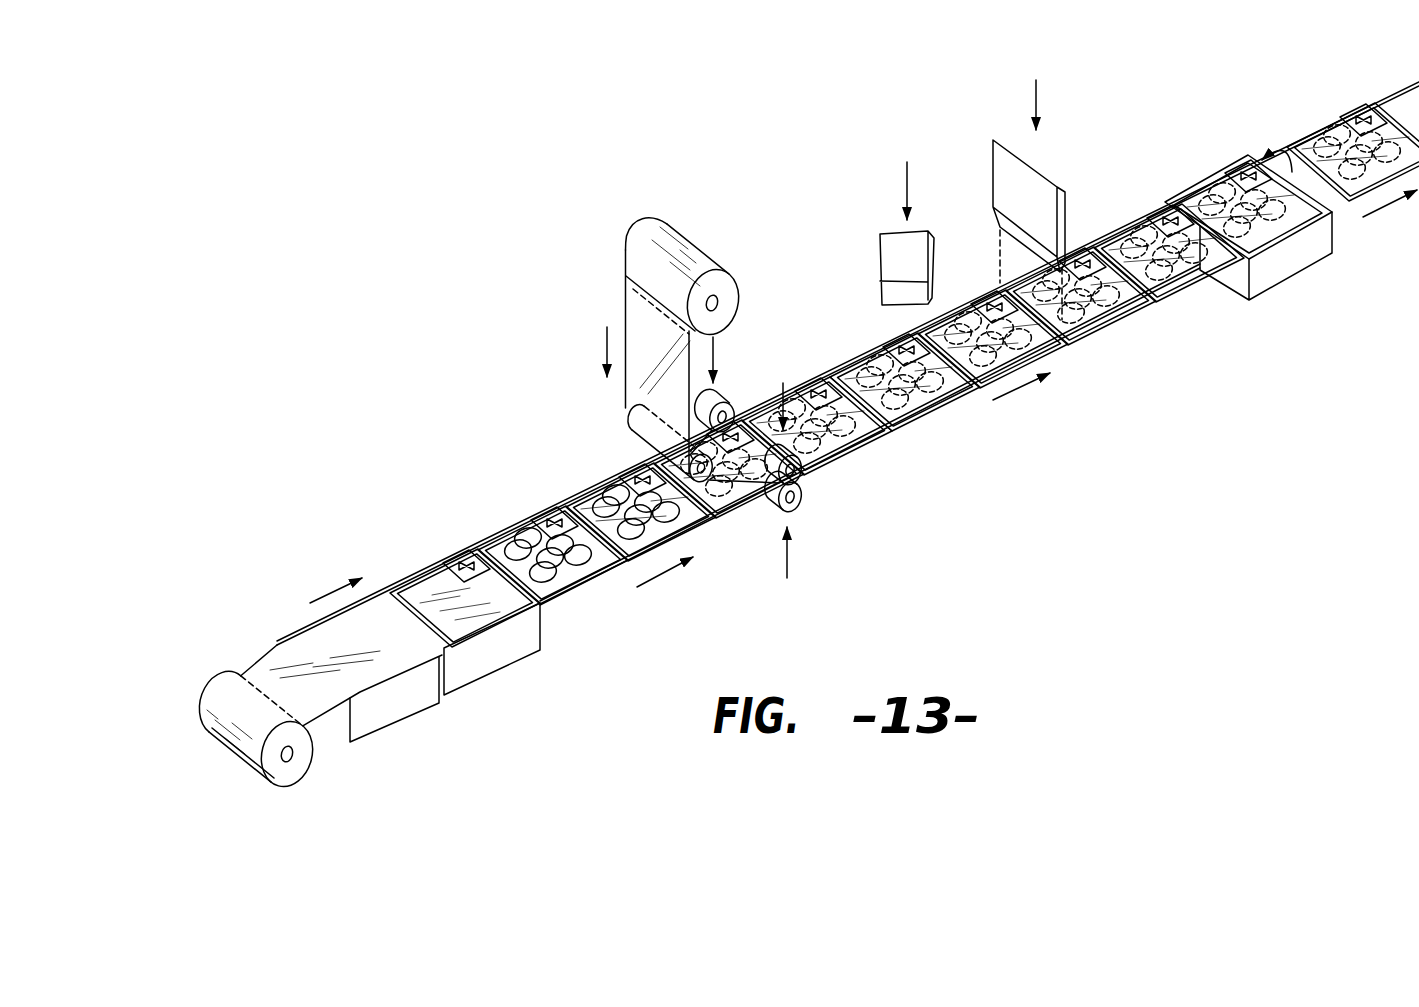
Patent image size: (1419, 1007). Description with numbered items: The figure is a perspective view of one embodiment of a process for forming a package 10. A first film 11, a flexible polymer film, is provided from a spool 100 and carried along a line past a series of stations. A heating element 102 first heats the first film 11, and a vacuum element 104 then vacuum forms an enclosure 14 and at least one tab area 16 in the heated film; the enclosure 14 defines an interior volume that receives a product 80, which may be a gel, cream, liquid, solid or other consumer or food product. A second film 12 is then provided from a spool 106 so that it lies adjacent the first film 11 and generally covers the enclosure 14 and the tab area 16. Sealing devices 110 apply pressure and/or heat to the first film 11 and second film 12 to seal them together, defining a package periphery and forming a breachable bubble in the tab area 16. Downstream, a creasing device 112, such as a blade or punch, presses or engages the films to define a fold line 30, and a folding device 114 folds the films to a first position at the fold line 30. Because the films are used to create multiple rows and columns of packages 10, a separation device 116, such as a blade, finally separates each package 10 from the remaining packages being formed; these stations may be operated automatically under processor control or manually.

The package 10 is at (1318, 108).
The first film 11 is at (271, 663).
The second film 12 is at (634, 311).
The enclosure 14 is at (446, 588).
The tab area 16 is at (458, 550).
The fold line 30 is at (903, 350).
The product 80 is at (524, 546).
The spool 100 is at (298, 759).
The heating element 102 is at (403, 698).
The vacuum element 104 is at (508, 648).
The spool 106 is at (714, 302).
The sealing device 110 is at (727, 397).
The creasing device 112 is at (893, 255).
The folding device 114 is at (1296, 247).
The separation device 116 is at (1068, 205).